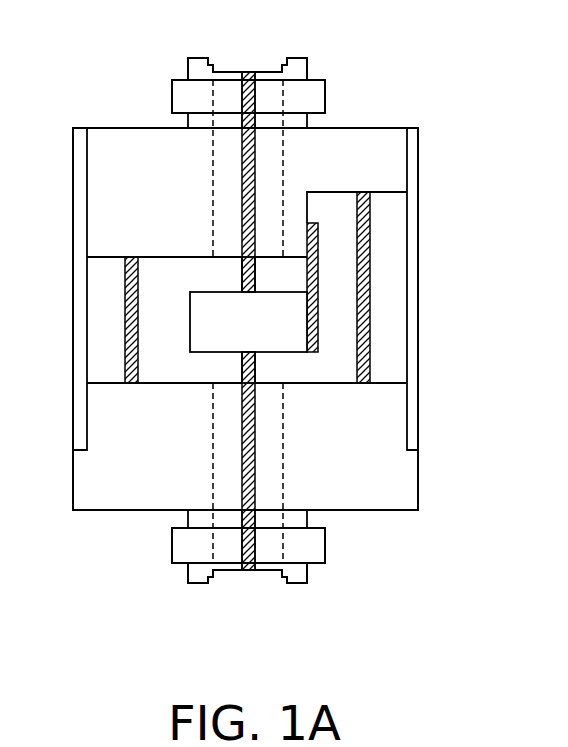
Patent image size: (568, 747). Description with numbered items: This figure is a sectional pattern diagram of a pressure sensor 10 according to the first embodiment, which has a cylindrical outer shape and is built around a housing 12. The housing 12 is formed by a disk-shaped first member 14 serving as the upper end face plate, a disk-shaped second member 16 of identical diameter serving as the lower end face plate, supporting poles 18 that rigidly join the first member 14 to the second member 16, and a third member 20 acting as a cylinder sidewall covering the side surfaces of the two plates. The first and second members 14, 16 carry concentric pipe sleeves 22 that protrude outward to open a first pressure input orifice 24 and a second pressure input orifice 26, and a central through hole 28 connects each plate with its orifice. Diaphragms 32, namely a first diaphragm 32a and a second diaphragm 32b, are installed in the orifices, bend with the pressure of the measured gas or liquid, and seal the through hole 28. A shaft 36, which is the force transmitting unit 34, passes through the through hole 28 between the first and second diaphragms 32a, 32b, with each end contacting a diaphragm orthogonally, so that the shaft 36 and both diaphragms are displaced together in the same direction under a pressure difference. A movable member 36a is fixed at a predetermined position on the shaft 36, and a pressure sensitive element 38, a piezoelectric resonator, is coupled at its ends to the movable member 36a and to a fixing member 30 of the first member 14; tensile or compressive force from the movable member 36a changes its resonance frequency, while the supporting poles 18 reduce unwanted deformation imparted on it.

The pressure sensor 10 is at (515, 98).
The housing 12 is at (372, 128).
The first member 14 is at (120, 128).
The second member 16 is at (385, 512).
The supporting poles 18 is at (125, 345).
The third member 20 is at (73, 313).
The pipe sleeves 22 is at (307, 62).
The first pressure input orifice 24 is at (307, 62).
The second pressure input orifice 26 is at (307, 576).
The through hole 28 is at (227, 191).
The fixing member 30 is at (307, 232).
The diaphragms 32 is at (246, 70).
The first diaphragm 32a is at (246, 70).
The second diaphragm 32b is at (250, 572).
The force transmitting unit 34 is at (242, 272).
The shaft 36 is at (242, 272).
The movable member 36a is at (190, 325).
The pressure sensitive element 38 is at (312, 294).